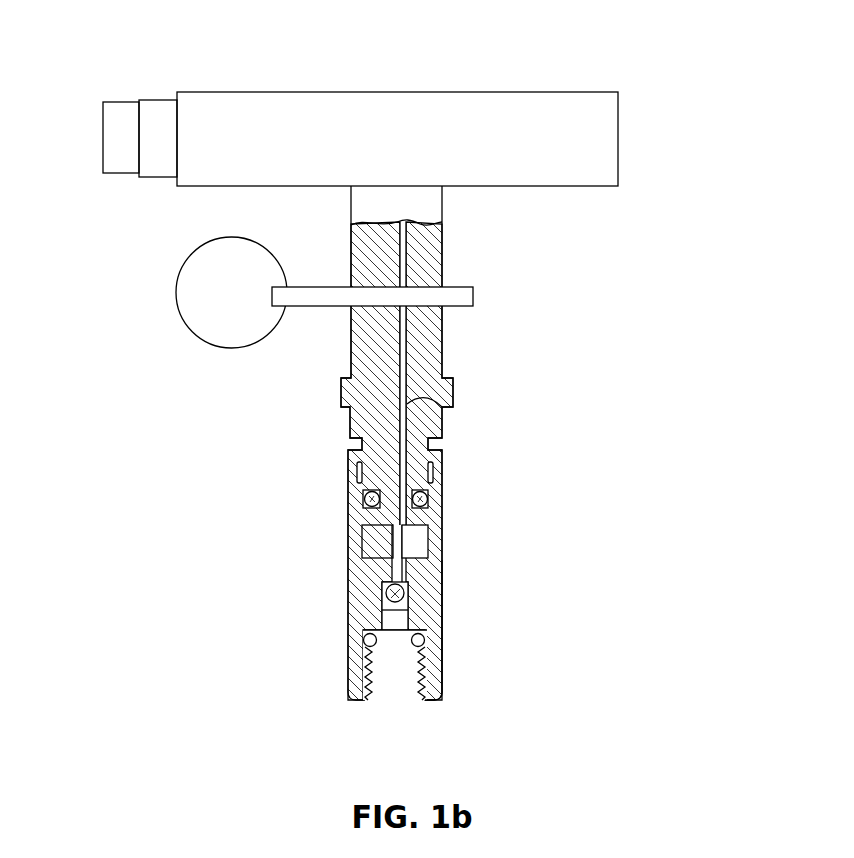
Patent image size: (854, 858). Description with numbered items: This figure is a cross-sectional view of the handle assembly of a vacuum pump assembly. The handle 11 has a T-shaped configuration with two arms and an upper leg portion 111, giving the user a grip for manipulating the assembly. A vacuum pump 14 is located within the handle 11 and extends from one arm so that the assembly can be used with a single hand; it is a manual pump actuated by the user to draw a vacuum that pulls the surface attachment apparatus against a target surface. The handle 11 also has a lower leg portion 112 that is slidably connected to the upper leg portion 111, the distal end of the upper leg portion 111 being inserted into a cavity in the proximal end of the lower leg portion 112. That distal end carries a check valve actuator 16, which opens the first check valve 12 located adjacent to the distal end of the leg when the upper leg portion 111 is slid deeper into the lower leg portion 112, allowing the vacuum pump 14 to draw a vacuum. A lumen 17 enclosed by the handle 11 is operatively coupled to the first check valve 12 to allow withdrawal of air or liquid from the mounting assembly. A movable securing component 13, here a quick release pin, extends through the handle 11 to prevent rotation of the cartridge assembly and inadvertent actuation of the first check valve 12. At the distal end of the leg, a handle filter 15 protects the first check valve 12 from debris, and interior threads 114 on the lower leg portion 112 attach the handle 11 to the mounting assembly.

The handle 11 is at (583, 93).
The vacuum pump 14 is at (152, 100).
The movable securing component 13 is at (473, 293).
The upper leg portion 111 is at (350, 355).
The lumen 17 is at (453, 407).
The lower leg portion 112 is at (348, 483).
The check valve actuator 16 is at (390, 525).
The first check valve 12 is at (408, 585).
The handle filter 15 is at (398, 642).
The interior threads 114 is at (440, 697).